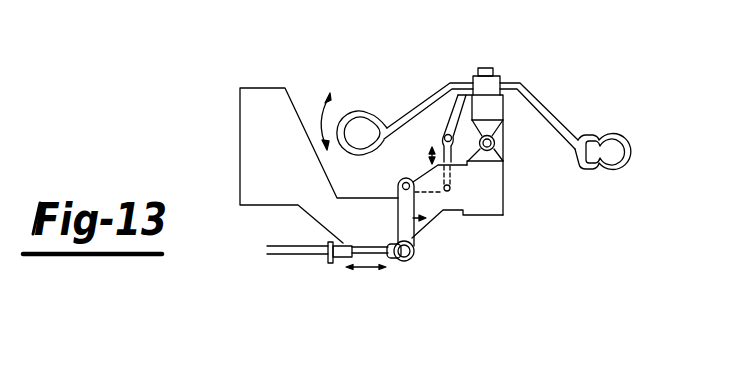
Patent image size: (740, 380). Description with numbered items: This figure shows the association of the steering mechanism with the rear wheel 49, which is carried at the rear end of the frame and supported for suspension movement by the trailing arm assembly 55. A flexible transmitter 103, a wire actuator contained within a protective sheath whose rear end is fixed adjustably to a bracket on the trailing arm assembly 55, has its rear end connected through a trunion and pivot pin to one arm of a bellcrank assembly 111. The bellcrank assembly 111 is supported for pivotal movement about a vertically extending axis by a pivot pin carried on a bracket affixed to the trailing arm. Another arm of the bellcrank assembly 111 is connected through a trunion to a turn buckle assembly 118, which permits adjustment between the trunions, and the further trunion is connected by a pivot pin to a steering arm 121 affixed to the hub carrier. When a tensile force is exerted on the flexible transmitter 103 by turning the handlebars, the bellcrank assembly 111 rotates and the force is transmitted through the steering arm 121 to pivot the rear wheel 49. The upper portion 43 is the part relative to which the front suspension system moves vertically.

The trailing arm assembly 55 is at (289, 87).
The rear wheel assembly 49 is at (428, 92).
The upper portion 43 is at (495, 143).
The steering arm 121 is at (456, 120).
The turn buckle assembly 118 is at (475, 168).
The bellcrank assembly 111 is at (427, 220).
The flexible transmitter 103 is at (368, 245).